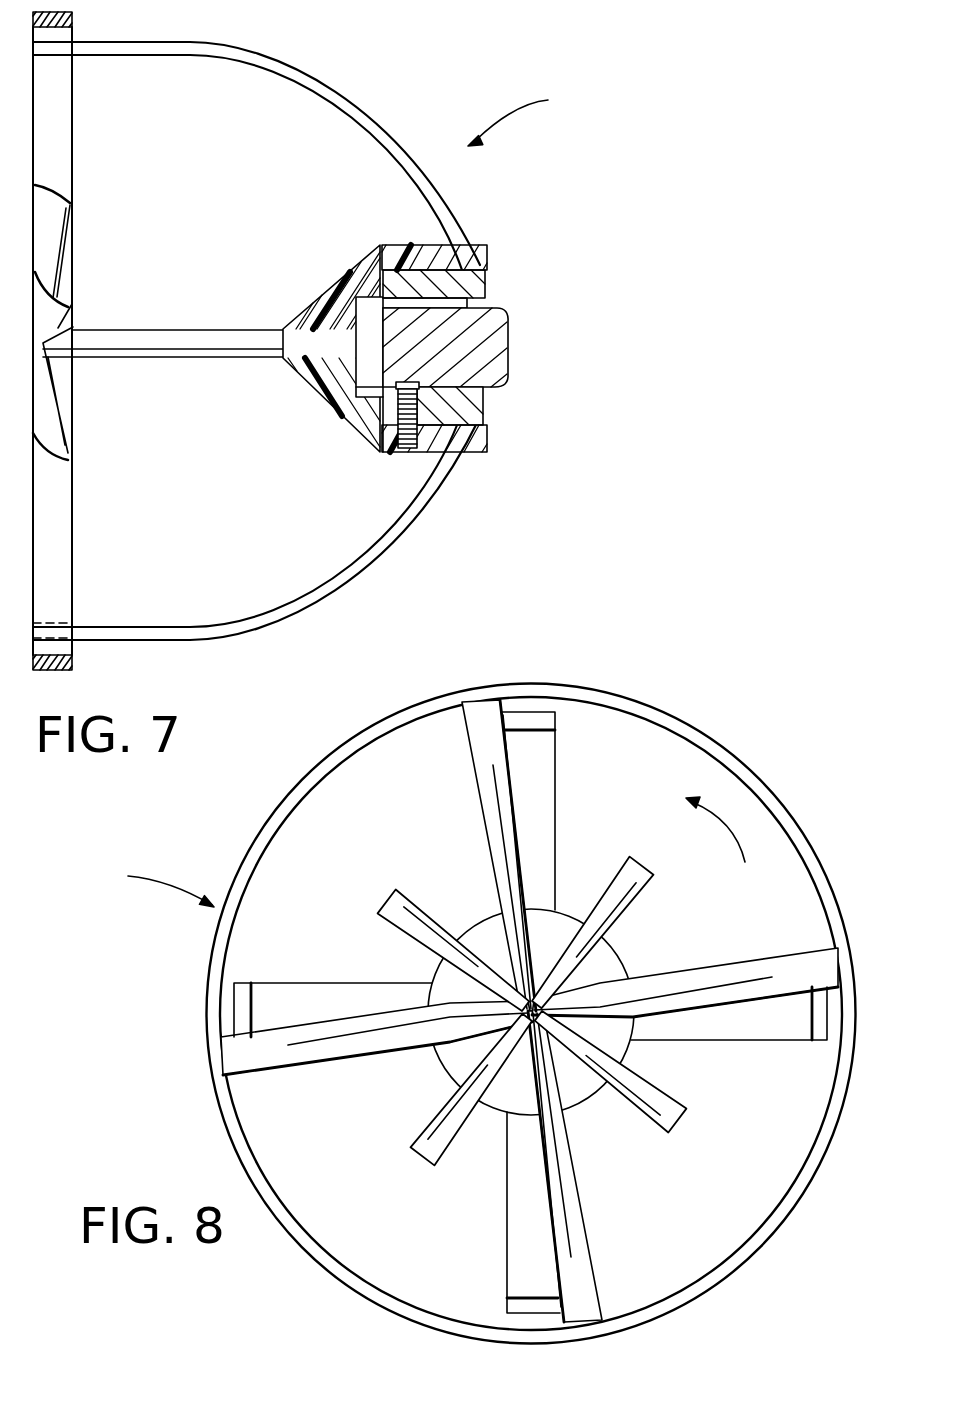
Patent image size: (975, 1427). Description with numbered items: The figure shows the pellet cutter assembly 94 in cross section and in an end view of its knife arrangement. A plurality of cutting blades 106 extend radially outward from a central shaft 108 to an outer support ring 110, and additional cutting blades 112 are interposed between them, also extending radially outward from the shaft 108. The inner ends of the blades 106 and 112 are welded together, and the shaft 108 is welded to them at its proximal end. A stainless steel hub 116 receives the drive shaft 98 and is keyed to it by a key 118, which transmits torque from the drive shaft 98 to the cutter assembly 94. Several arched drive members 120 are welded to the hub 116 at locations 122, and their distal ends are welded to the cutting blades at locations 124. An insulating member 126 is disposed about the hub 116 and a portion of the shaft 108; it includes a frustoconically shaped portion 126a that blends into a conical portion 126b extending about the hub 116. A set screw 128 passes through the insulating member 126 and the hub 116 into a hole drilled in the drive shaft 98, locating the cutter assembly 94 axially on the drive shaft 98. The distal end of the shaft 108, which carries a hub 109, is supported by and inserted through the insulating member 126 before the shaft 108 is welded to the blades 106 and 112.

In FIG. 7, the cutter assembly 94 is at (526, 117).
In FIG. 8, the cutter assembly 94 is at (152, 886).
In FIG. 7, the drive shaft 98 is at (500, 333).
In FIG. 7, the cutting blades 106 is at (62, 105).
In FIG. 8, the cutting blades 106 is at (483, 790).
In FIG. 7, the shaft 108 is at (162, 343).
In FIG. 7, the hub 109 is at (368, 300).
In FIG. 7, the support ring 110 is at (70, 658).
In FIG. 8, the support ring 110 is at (688, 712).
In FIG. 7, the additional cutting blades 112 is at (58, 220).
In FIG. 8, the additional cutting blades 112 is at (392, 900).
In FIG. 7, the stainless steel hub 116 is at (483, 413).
In FIG. 7, the key 118 is at (467, 302).
In FIG. 7, the arched drive members 120 is at (342, 92).
In FIG. 8, the arched drive members 120 is at (548, 782).
In FIG. 7, the locations 122 is at (478, 246).
In FIG. 8, the locations 124 is at (497, 722).
In FIG. 7, the insulating member 126 is at (338, 396).
In FIG. 7, the frustoconically shaped portion 126a is at (312, 300).
In FIG. 8, the frustoconically shaped portion 126a is at (605, 967).
In FIG. 7, the conical portion 126b is at (388, 244).
In FIG. 7, the set screw 128 is at (408, 452).